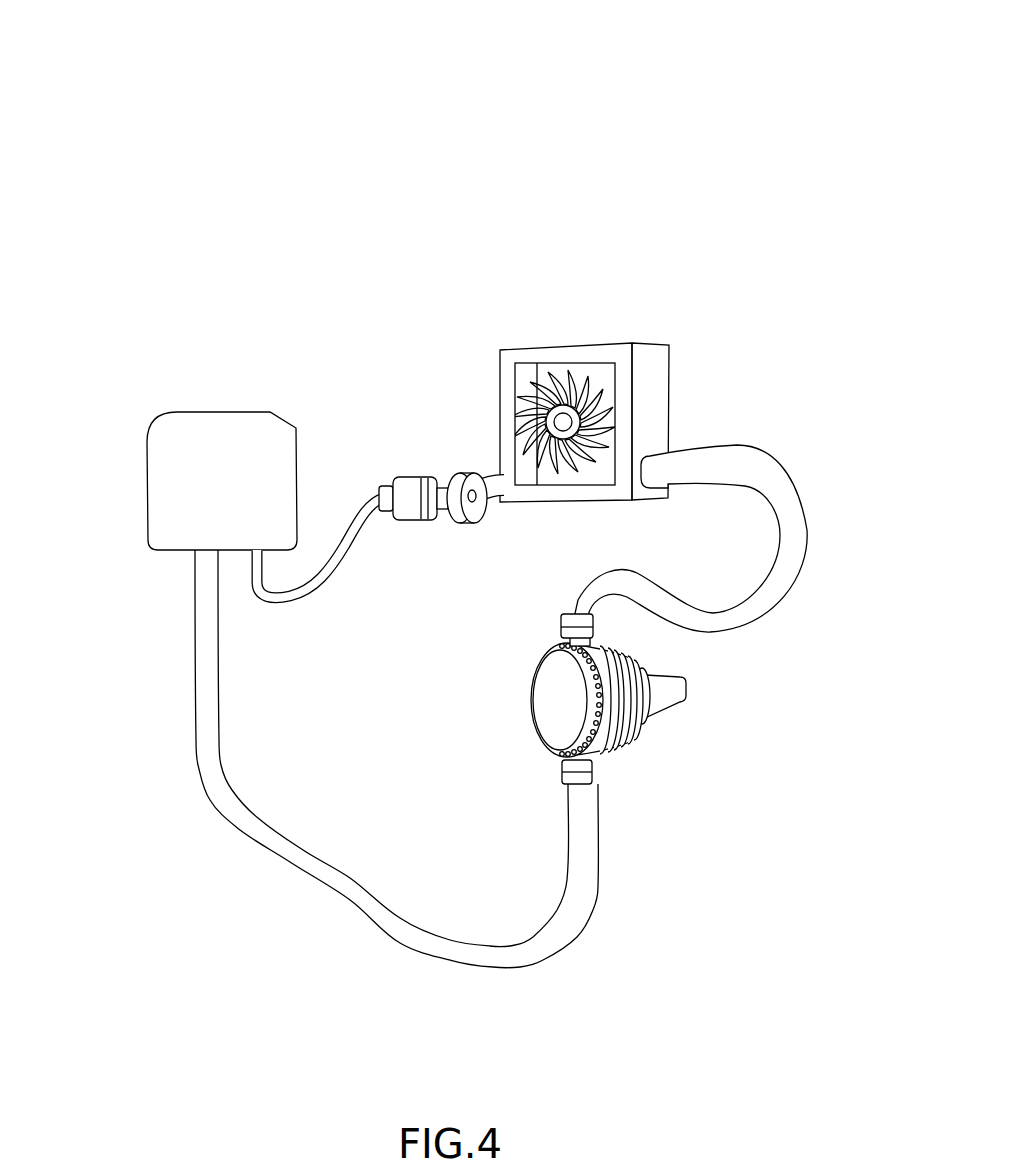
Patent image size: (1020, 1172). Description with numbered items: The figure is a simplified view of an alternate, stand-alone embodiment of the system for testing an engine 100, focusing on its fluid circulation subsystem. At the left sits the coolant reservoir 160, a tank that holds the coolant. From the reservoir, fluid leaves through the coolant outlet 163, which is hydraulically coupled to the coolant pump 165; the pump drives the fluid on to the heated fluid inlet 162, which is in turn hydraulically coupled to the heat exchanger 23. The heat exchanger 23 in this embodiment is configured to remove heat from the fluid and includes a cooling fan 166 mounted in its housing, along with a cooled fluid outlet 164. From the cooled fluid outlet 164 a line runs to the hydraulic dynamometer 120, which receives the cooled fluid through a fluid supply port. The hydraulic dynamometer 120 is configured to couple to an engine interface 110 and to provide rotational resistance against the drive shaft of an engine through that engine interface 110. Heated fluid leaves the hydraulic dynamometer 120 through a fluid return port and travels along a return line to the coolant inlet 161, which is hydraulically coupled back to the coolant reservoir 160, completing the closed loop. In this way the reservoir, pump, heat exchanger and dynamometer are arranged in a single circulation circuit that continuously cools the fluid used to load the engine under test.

The system for testing an engine 100 is at (540, 88).
The heat exchanger 23 is at (648, 357).
The cooling fan 166 is at (565, 421).
The cooled fluid outlet 164 is at (652, 473).
The coolant reservoir 160 is at (183, 434).
The coolant inlet 161 is at (203, 563).
The coolant outlet 163 is at (255, 562).
The heated fluid inlet 162 is at (474, 494).
The coolant pump 165 is at (397, 492).
The engine interface 110 is at (672, 692).
The hydraulic dynamometer 120 is at (549, 705).